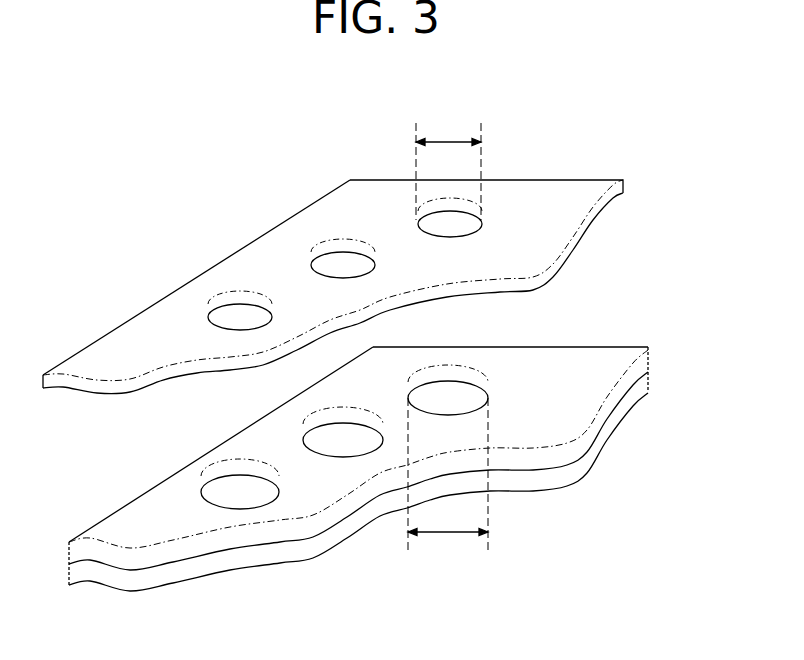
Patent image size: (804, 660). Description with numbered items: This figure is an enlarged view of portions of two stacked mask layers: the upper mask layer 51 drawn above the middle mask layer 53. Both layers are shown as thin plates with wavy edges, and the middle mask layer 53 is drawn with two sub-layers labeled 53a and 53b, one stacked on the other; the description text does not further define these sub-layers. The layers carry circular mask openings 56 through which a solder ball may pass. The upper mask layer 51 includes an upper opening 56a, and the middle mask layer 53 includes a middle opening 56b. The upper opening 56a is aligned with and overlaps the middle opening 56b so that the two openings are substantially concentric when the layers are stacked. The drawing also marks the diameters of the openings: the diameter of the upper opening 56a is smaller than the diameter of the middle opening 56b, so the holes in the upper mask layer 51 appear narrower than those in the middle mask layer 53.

The upper mask layer 51 is at (625, 182).
The middle mask layer 53 is at (431, 465).
The first layer of second plate 53a is at (638, 362).
The second layer of second plate 53b is at (638, 383).
The circular mask openings 56 is at (167, 400).
The upper opening 56a is at (238, 321).
The middle opening 56b is at (247, 492).